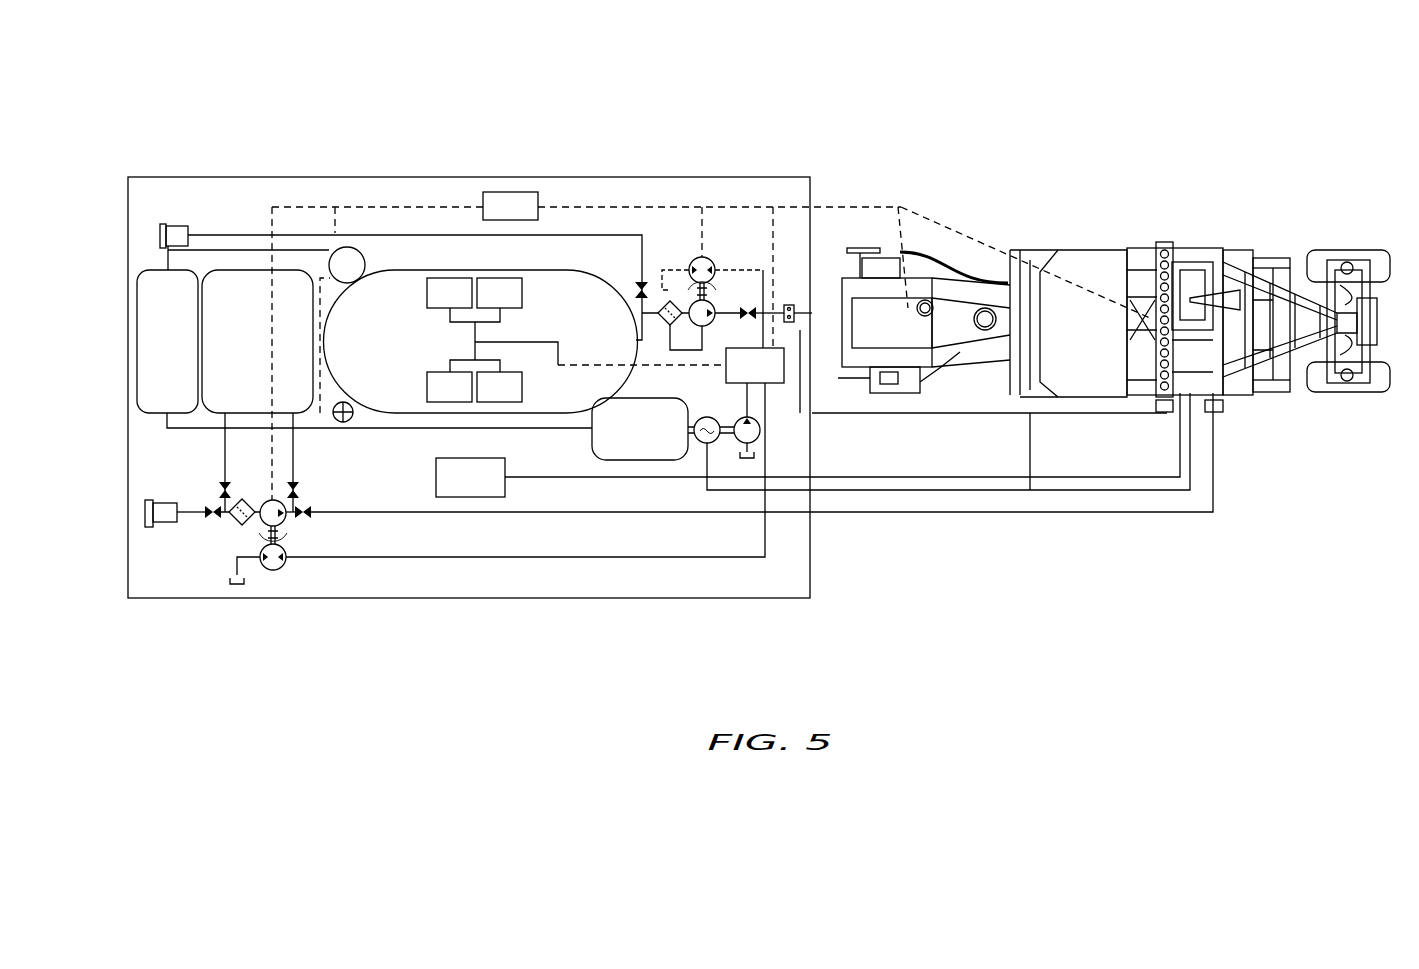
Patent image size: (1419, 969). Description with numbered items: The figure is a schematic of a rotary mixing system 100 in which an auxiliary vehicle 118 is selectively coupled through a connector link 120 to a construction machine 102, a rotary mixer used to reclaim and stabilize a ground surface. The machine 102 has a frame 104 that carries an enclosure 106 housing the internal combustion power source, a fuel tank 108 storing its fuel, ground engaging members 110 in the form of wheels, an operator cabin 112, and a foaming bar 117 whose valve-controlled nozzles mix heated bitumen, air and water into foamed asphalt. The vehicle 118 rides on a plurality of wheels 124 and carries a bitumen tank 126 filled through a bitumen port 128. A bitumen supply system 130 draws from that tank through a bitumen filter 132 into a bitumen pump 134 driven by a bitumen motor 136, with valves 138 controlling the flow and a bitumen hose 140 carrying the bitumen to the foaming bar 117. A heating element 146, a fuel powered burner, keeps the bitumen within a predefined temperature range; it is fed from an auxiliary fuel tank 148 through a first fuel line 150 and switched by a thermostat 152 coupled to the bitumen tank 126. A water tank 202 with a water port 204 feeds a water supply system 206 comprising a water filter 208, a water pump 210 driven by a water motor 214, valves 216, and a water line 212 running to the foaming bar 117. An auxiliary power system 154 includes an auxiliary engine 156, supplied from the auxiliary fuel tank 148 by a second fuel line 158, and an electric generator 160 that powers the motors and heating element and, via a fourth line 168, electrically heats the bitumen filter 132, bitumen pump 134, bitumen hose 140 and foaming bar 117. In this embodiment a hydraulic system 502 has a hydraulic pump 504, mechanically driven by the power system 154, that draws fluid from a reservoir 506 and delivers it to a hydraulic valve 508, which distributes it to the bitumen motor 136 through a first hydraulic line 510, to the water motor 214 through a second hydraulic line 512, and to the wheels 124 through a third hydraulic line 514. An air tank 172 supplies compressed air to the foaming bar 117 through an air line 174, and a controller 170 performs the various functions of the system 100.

The rotary mixing system 100 is at (948, 70).
The construction machine 102 is at (1062, 208).
The frame 104 is at (1258, 395).
The enclosure 106 is at (965, 344).
The fuel tank 108 is at (1298, 345).
The ground engaging members 110 is at (1368, 252).
The operator cabin 112 is at (990, 240).
The foaming bar 117 is at (1168, 242).
The auxiliary vehicle 118 is at (475, 177).
The connector link 120 is at (818, 325).
The wheels 124 is at (474, 340).
The bitumen tank 126 is at (479, 341).
The bitumen port 128 is at (160, 230).
The bitumen supply system 130 is at (724, 304).
The bitumen filter 132 is at (636, 290).
The bitumen pump 134 is at (680, 302).
The bitumen motor 136 is at (712, 256).
The valves 138 is at (745, 303).
The bitumen hose 140 is at (1015, 416).
The heating element 146 is at (348, 258).
The auxiliary fuel tank 148 is at (167, 341).
The first fuel line 150 is at (210, 250).
The thermostat 152 is at (351, 416).
The auxiliary power system 154 is at (677, 462).
The auxiliary engine 156 is at (640, 429).
The second fuel line 158 is at (557, 430).
The electric generator 160 is at (697, 444).
The fourth line 168 is at (1110, 492).
The controller 170 is at (711, 346).
The air tank 172 is at (470, 477).
The air line 174 is at (892, 479).
The water tank 202 is at (257, 341).
The water port 204 is at (145, 507).
The water supply system 206 is at (214, 531).
The water filter 208 is at (238, 528).
The water pump 210 is at (300, 526).
The water line 212 is at (617, 514).
The water motor 214 is at (282, 570).
The valves 216 is at (212, 502).
The hydraulic system 502 is at (782, 402).
The hydraulic pump 504 is at (760, 430).
The reservoir 506 is at (658, 288).
The hydraulic valve 508 is at (535, 452).
The first hydraulic line 510 is at (767, 288).
The second hydraulic line 512 is at (473, 560).
The third hydraulic line 514 is at (547, 342).